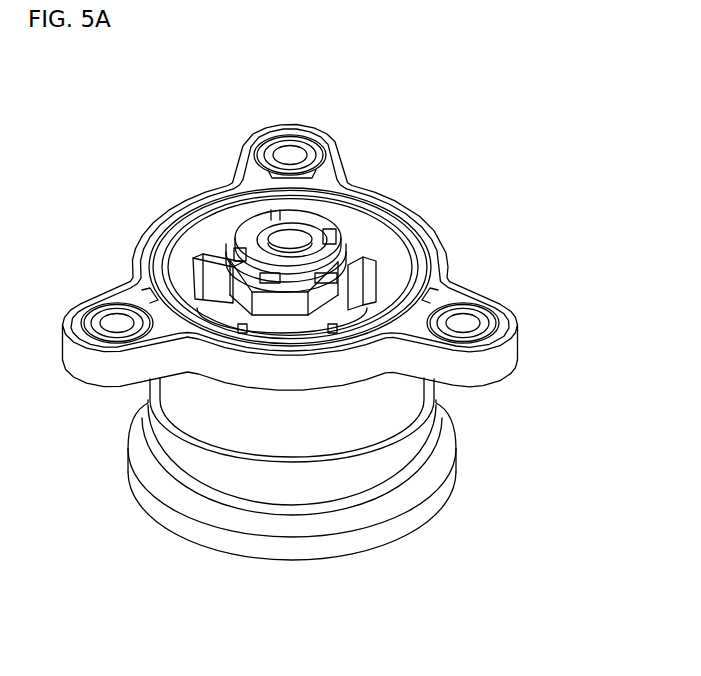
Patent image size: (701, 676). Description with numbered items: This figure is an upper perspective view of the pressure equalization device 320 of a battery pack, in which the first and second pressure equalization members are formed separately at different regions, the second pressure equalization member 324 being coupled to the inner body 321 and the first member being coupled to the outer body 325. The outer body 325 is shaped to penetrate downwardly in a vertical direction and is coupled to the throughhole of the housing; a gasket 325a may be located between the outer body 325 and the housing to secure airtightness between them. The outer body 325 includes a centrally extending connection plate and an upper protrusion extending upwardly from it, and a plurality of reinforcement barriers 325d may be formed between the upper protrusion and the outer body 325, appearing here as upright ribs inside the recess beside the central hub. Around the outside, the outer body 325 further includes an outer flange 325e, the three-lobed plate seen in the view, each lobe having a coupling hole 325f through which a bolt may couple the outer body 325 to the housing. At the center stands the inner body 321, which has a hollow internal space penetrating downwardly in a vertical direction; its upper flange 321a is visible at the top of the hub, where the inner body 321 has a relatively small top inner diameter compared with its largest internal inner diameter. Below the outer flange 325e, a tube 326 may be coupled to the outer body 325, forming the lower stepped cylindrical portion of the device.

The pressure equalization device 320 is at (381, 114).
The inner body 321 is at (240, 290).
The upper flange 321a is at (243, 224).
The second pressure equalization member 324 is at (290, 238).
The outer body 325 is at (388, 410).
The gasket 325a is at (433, 247).
The reinforcement barriers 325d is at (362, 260).
The outer flange 325e is at (503, 353).
The coupling hole 325f is at (470, 323).
The tube 326 is at (382, 473).